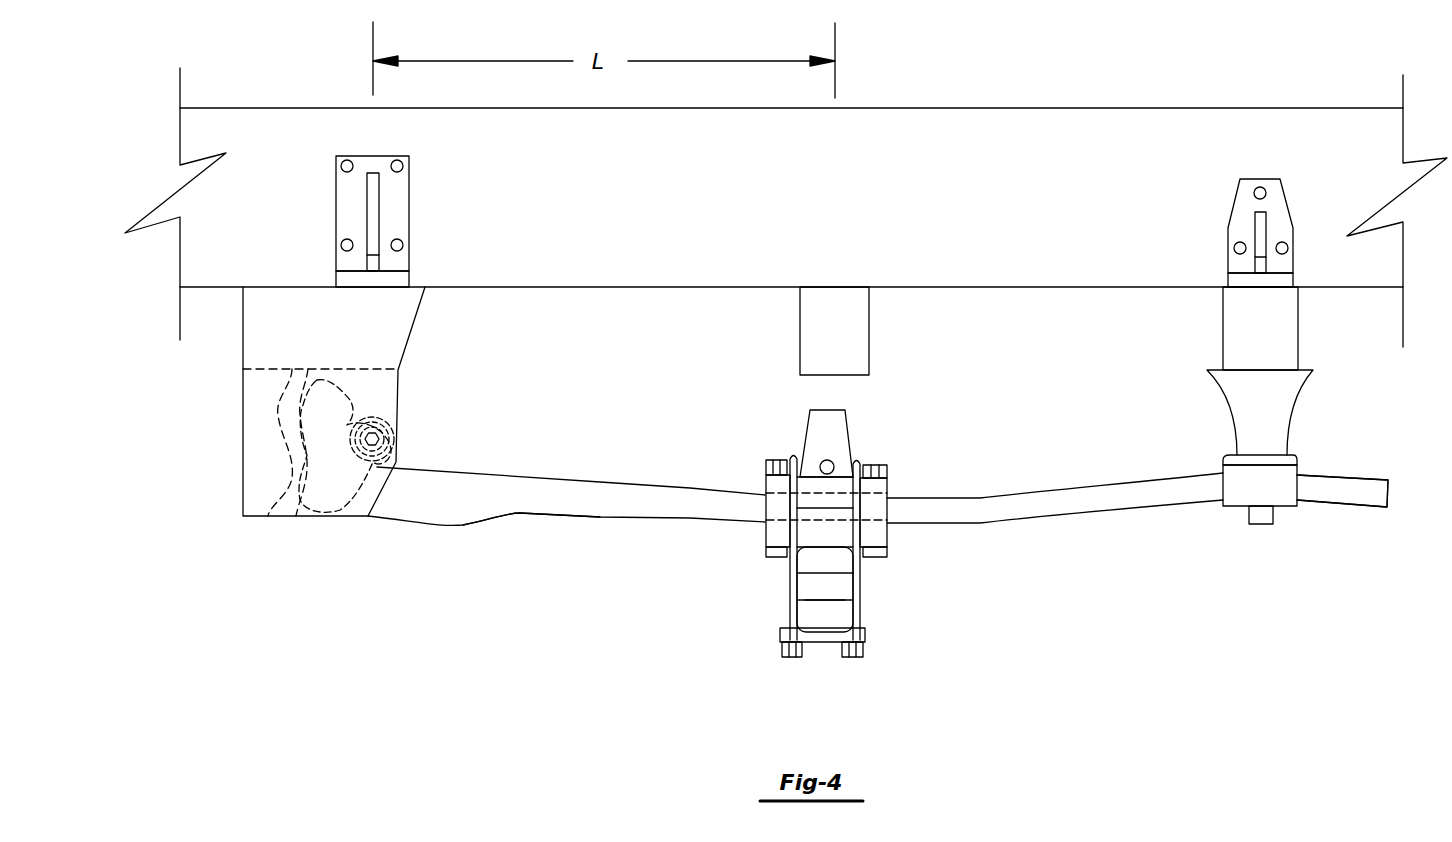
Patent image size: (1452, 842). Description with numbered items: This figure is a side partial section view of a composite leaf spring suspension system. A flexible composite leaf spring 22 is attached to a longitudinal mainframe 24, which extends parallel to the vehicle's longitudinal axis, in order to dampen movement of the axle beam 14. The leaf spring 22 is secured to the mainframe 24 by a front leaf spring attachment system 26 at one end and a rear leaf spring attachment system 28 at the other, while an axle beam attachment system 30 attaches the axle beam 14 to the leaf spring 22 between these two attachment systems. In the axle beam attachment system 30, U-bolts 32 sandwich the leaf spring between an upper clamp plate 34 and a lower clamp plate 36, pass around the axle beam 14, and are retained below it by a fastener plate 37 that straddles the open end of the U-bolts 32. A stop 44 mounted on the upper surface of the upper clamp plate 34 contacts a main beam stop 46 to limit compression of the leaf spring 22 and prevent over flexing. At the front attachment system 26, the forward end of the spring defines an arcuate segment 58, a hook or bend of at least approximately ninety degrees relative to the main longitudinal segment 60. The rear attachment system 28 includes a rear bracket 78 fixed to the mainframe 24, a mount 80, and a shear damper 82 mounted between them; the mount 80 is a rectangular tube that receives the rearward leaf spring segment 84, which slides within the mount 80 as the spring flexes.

The axle beam 14 is at (842, 610).
The composite leaf spring 22 is at (980, 498).
The longitudinal mainframe 24 is at (826, 224).
The front leaf spring attachment system 26 is at (290, 387).
The rear leaf spring attachment system 28 is at (1288, 374).
The axle beam attachment system 30 is at (846, 535).
The U-bolt 32 is at (778, 602).
The upper clamp plate 34 is at (853, 467).
The lower clamp plate 36 is at (828, 530).
The fastener plate 37 is at (822, 645).
The stop 44 is at (818, 430).
The main beam stop 46 is at (810, 318).
The arcuate segment 58 is at (330, 462).
The main longitudinal segment 60 is at (553, 497).
The rear bracket 78 is at (1242, 335).
The mount 80 is at (1275, 477).
The shear damper 82 is at (1252, 438).
The rearward leaf spring segment 84 is at (1162, 497).